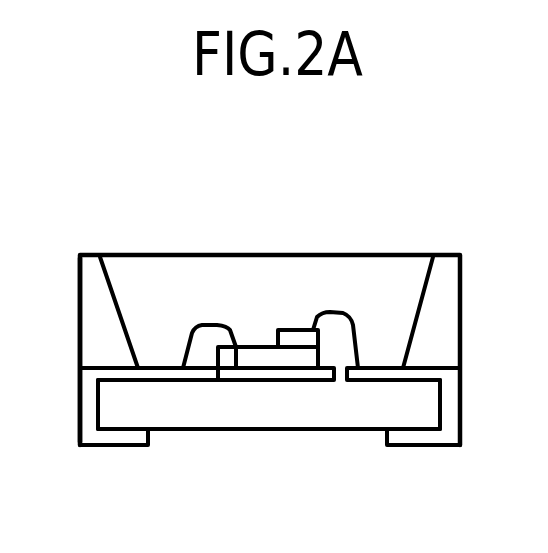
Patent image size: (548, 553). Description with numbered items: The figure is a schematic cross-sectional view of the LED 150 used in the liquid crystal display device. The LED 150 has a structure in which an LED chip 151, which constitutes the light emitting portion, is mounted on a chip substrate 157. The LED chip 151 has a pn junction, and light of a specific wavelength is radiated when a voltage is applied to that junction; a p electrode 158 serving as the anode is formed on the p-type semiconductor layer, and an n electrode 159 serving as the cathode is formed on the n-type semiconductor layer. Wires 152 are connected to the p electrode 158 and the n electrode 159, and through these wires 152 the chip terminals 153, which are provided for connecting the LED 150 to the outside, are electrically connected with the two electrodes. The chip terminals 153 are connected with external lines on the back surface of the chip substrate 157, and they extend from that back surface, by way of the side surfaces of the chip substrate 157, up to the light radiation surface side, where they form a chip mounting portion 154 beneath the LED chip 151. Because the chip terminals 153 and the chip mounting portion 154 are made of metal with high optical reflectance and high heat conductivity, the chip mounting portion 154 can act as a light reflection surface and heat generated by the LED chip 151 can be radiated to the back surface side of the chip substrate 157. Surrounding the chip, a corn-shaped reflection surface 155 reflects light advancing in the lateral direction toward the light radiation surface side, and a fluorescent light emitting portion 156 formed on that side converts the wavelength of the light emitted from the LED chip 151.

The LED 150 is at (272, 429).
The LED chip 151 is at (275, 358).
The wires 152 is at (197, 330).
The chip terminals 153 is at (112, 447).
The chip mounting portion 154 is at (222, 377).
The corn-shaped reflection surface 155 is at (90, 277).
The fluorescent light emitting portion 156 is at (145, 300).
The chip substrate 157 is at (342, 398).
The p electrode 158 is at (304, 330).
The n electrode 159 is at (249, 357).